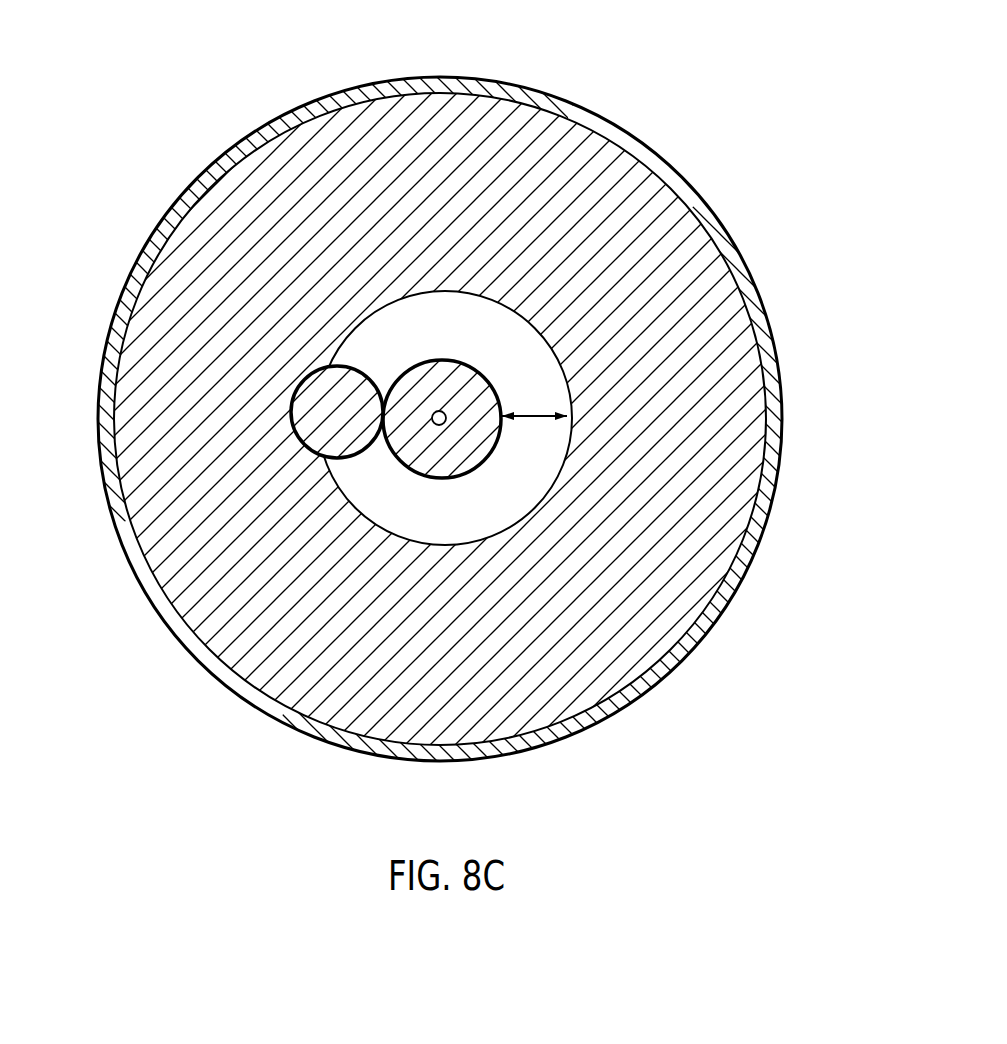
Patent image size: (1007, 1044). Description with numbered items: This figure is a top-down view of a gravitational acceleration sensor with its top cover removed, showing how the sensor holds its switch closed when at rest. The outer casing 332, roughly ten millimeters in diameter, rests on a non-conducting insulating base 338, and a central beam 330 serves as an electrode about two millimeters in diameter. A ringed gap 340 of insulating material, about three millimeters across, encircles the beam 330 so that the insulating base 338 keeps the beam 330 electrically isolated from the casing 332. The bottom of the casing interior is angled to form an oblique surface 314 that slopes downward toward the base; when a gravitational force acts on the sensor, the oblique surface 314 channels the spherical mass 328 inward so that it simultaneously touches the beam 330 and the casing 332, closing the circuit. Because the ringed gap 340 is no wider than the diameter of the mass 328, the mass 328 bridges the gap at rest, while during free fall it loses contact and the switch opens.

The oblique surface 314 is at (177, 357).
The spherical mass 328 is at (333, 410).
The beam 330 is at (428, 388).
The casing 332 is at (572, 105).
The insulating base 338 is at (493, 495).
The ringed gap 340 is at (537, 413).